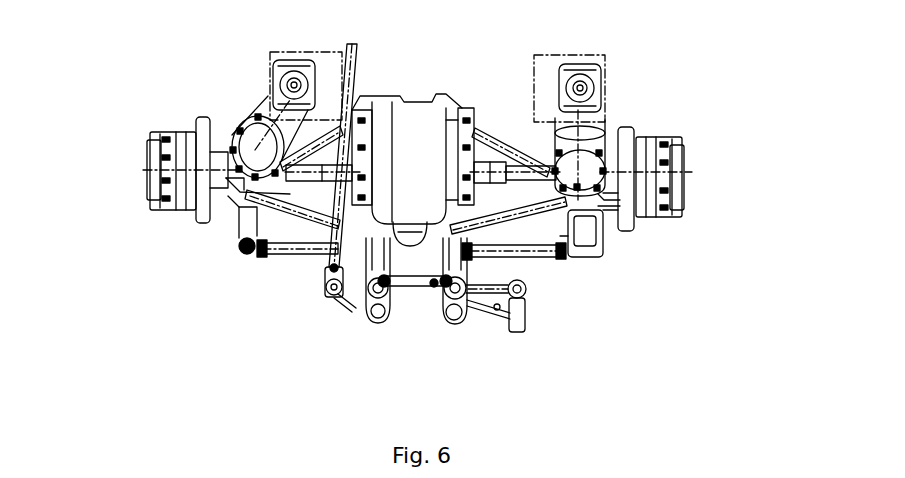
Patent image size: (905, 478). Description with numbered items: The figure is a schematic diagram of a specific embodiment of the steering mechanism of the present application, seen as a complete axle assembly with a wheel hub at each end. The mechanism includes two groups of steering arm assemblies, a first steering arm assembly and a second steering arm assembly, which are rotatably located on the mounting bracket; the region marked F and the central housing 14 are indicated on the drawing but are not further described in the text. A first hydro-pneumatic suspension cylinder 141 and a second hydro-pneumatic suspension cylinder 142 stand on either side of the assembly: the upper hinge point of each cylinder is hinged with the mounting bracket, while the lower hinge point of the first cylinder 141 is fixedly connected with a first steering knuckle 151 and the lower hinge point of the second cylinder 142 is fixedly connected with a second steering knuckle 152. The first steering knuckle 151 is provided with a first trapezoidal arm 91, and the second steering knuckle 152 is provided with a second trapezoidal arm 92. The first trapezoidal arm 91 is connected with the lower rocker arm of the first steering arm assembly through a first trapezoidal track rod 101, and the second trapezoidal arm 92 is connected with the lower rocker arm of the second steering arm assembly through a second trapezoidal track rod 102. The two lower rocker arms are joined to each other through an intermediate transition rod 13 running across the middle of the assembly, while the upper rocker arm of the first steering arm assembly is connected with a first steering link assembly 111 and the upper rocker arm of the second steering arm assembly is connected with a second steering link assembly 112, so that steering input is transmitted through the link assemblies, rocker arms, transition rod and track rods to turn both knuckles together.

The detail region F is at (543, 72).
The intermediate transition rod 13 is at (413, 278).
The axle housing 14 is at (436, 226).
The first trapezoidal arm 91 is at (240, 208).
The second trapezoidal arm 92 is at (586, 258).
The first trapezoidal track rod 101 is at (270, 250).
The second trapezoidal track rod 102 is at (543, 257).
The first steering link assembly 111 is at (325, 268).
The second steering link assembly 112 is at (523, 332).
The first hydro-pneumatic suspension cylinder 141 is at (258, 133).
The second hydro-pneumatic suspension cylinder 142 is at (587, 140).
The first steering knuckle 151 is at (190, 210).
The second steering knuckle 152 is at (658, 215).